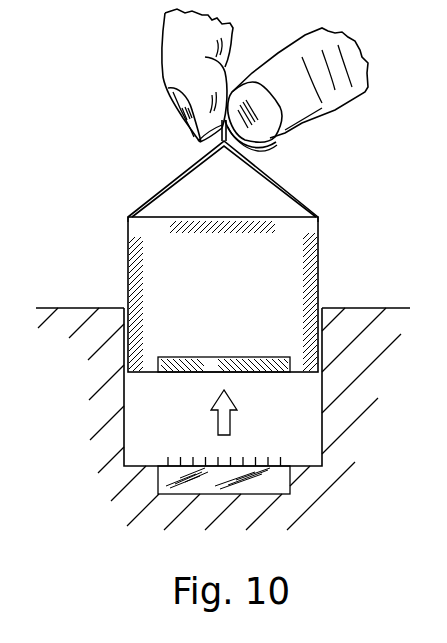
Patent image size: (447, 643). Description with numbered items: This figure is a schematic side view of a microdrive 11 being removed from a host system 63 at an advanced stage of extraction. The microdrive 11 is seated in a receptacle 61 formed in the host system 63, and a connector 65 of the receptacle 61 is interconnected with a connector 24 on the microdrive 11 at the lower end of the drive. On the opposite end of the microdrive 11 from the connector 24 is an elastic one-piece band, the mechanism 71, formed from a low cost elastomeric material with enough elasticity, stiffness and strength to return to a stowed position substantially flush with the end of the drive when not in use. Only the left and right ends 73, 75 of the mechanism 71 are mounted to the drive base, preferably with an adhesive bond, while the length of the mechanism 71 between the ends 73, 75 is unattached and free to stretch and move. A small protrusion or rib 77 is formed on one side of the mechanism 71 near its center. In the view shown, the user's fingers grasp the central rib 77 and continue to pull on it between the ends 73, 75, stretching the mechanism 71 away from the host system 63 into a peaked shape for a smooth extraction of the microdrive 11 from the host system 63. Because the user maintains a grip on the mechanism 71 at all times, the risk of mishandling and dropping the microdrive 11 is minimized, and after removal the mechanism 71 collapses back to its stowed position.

The microdrive 11 is at (238, 288).
The connector 24 is at (210, 357).
The receptacle 61 is at (124, 393).
The host system 63 is at (80, 313).
The connector 65 is at (283, 478).
The mechanism 71 is at (262, 171).
The left end 73 is at (128, 215).
The right end 75 is at (318, 216).
The rib 77 is at (222, 125).